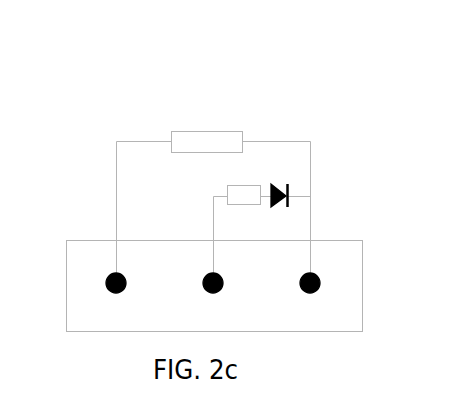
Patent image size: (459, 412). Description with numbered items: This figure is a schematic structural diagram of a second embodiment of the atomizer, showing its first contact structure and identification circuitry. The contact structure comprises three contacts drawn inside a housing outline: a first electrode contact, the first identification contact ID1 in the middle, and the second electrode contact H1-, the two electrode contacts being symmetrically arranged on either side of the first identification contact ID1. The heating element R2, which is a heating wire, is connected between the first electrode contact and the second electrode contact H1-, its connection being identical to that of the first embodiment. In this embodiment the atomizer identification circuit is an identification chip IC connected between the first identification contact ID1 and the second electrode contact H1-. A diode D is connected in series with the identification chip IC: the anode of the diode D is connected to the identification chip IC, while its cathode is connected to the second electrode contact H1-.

The heating element R2 is at (207, 126).
The identification chip IC is at (244, 179).
The diode D is at (278, 211).
The first identification contact ID1 is at (212, 300).
The second electrode contact H1- is at (309, 300).